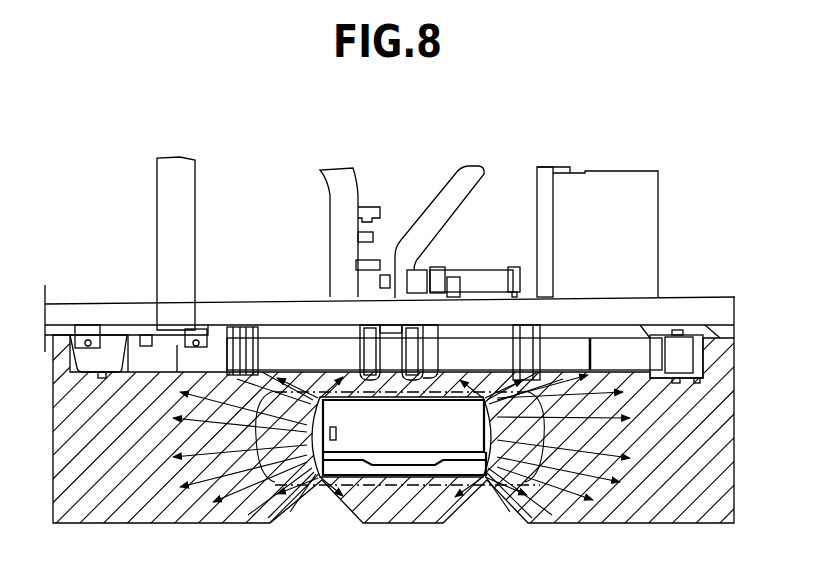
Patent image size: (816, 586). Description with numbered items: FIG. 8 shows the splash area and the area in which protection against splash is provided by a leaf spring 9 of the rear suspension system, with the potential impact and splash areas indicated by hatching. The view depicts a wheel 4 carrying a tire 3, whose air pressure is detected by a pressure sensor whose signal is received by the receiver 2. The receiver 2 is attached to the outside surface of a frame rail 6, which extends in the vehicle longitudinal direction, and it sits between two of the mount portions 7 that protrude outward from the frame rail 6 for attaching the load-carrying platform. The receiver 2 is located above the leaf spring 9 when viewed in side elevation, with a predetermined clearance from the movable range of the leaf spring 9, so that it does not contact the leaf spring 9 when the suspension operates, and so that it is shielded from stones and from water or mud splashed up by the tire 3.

The receiver 2 is at (217, 373).
The tire 3 is at (488, 480).
The wheel 4 is at (407, 468).
The frame rail 6 is at (304, 312).
The mount portion 7 is at (92, 327).
The leaf spring 9 is at (568, 352).